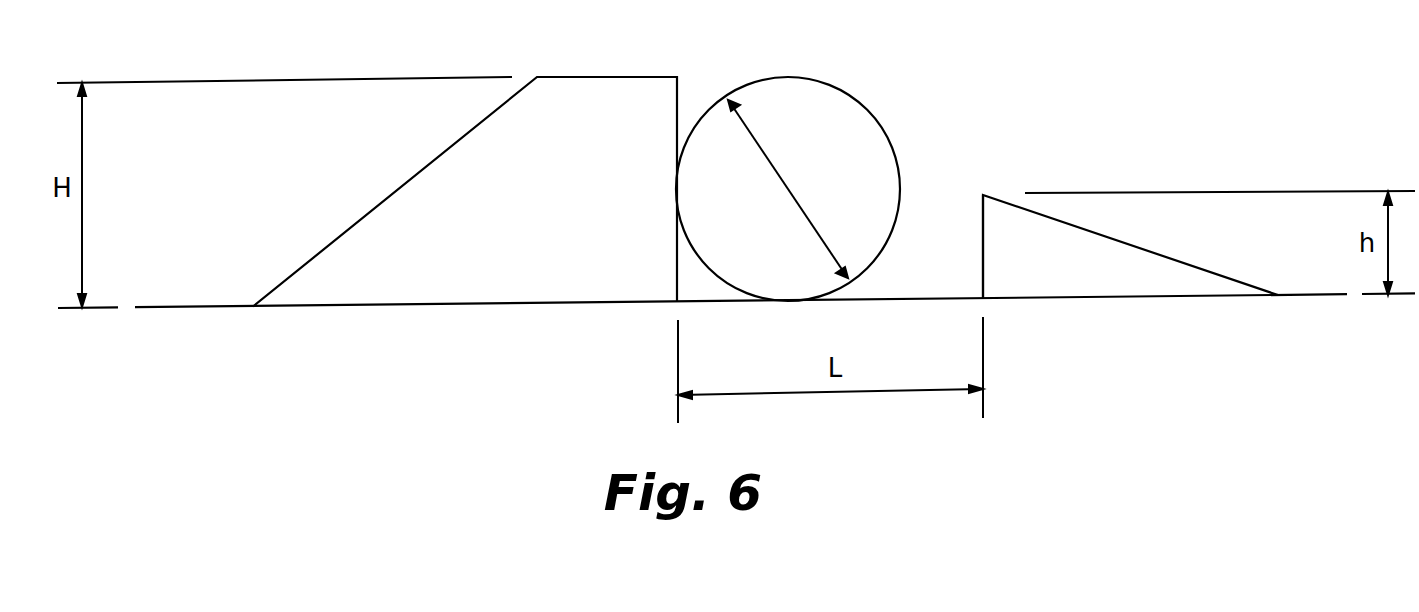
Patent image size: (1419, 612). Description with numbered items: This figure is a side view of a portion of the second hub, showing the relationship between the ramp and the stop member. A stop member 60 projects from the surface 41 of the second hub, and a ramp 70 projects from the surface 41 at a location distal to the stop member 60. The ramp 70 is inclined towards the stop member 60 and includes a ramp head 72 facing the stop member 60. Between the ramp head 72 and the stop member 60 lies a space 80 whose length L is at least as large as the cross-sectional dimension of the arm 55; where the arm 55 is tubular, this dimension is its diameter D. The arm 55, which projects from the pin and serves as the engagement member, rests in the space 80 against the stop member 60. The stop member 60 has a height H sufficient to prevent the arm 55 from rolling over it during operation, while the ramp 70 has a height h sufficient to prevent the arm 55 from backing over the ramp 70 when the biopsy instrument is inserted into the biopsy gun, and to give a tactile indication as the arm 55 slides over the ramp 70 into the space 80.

The surface 41 is at (198, 307).
The stop member 60 is at (487, 267).
The space 80 is at (686, 116).
The arm 55 is at (845, 88).
The ramp 70 is at (1080, 273).
The ramp head 72 is at (982, 223).